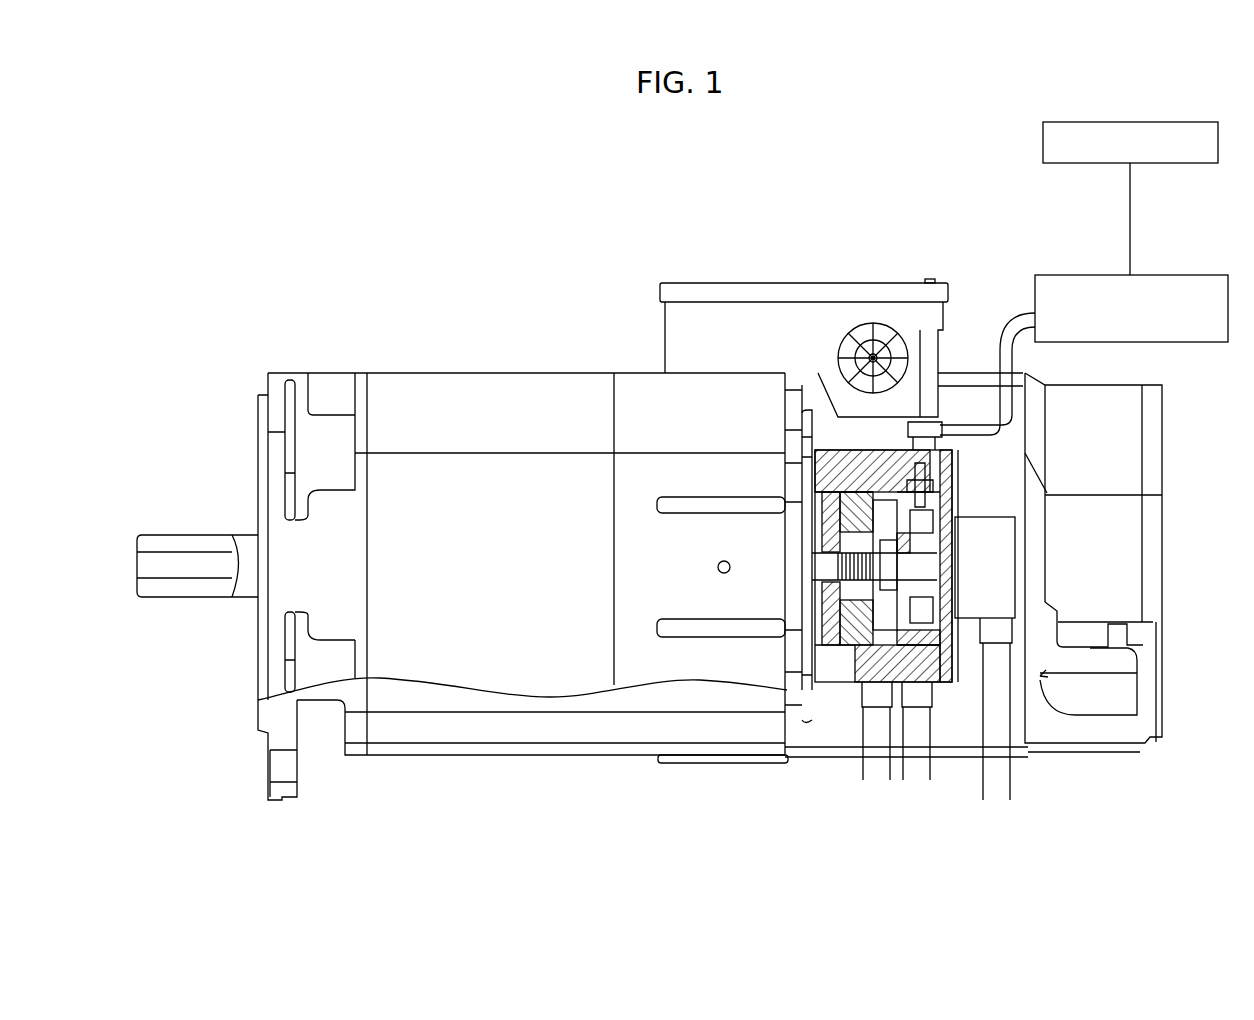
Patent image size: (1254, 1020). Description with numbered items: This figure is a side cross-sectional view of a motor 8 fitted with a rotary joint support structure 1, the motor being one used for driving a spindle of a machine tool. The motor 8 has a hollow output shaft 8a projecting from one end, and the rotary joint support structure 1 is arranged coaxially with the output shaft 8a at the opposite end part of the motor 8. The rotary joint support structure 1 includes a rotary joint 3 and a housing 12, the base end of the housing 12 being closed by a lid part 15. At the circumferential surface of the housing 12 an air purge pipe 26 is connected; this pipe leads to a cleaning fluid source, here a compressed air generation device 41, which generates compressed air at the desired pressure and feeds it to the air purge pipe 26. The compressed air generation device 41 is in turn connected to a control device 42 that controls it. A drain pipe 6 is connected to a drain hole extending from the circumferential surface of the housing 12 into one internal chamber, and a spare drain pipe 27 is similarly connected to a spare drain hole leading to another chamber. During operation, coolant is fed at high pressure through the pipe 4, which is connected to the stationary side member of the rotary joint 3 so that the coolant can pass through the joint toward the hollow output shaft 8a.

The rotary joint support structure 1 is at (963, 461).
The rotary joint 3 is at (990, 507).
The pipe 4 is at (995, 782).
The drain pipe 6 is at (913, 760).
The motor 8 is at (703, 730).
The hollow output shaft 8a is at (180, 540).
The housing 12 is at (845, 465).
The lid part 15 is at (958, 685).
The air purge pipe 26 is at (955, 403).
The spare drain pipe 27 is at (875, 760).
The compressed air generation device 41 is at (1035, 293).
The control device 42 is at (1043, 143).